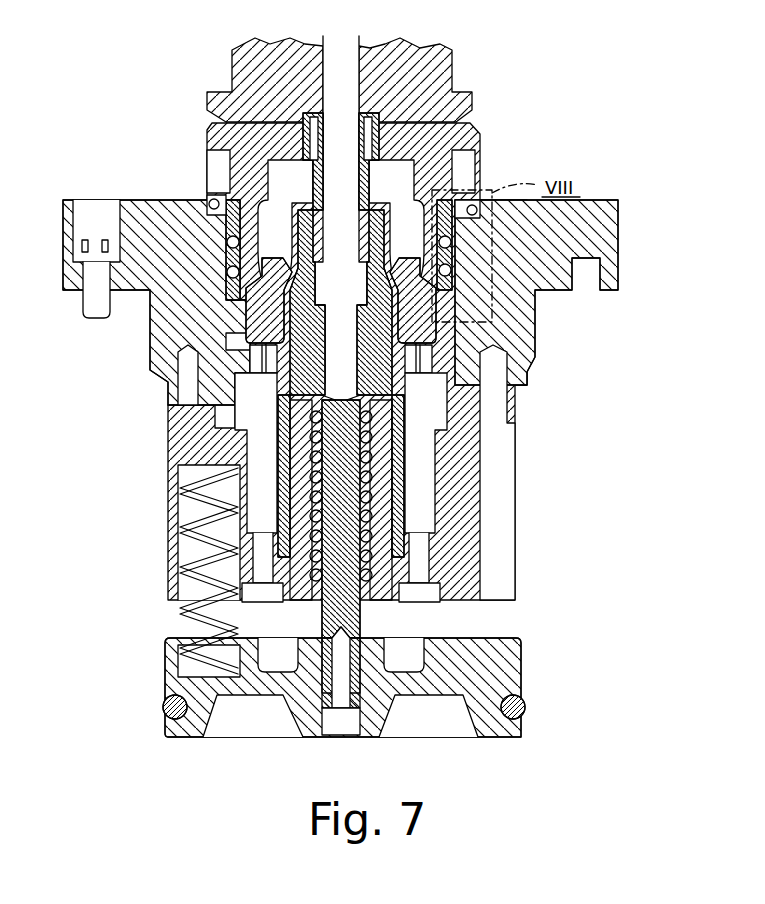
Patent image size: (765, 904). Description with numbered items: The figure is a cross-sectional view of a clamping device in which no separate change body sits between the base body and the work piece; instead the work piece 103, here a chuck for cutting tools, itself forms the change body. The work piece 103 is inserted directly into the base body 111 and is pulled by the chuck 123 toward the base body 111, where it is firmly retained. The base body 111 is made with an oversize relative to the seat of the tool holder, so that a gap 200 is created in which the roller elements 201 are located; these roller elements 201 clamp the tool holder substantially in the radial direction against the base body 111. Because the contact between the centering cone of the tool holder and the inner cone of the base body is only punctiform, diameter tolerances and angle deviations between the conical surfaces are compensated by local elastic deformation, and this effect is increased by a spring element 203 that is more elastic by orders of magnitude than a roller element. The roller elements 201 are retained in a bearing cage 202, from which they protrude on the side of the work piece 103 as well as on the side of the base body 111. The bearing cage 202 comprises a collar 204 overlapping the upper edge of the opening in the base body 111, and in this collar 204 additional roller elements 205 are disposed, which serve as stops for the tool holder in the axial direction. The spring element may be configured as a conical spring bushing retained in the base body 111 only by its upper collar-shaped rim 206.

The work piece 103 is at (433, 82).
The base body 111 is at (543, 168).
The chuck 123 is at (275, 273).
The gap 200 is at (447, 256).
The roller element 201 is at (233, 272).
The bearing cage 202 is at (231, 202).
The spring element 203 is at (453, 290).
The collar of bearing cage 204 is at (212, 206).
The additional roller element 205 is at (210, 203).
The collar rim of spring bushing 206 is at (473, 207).